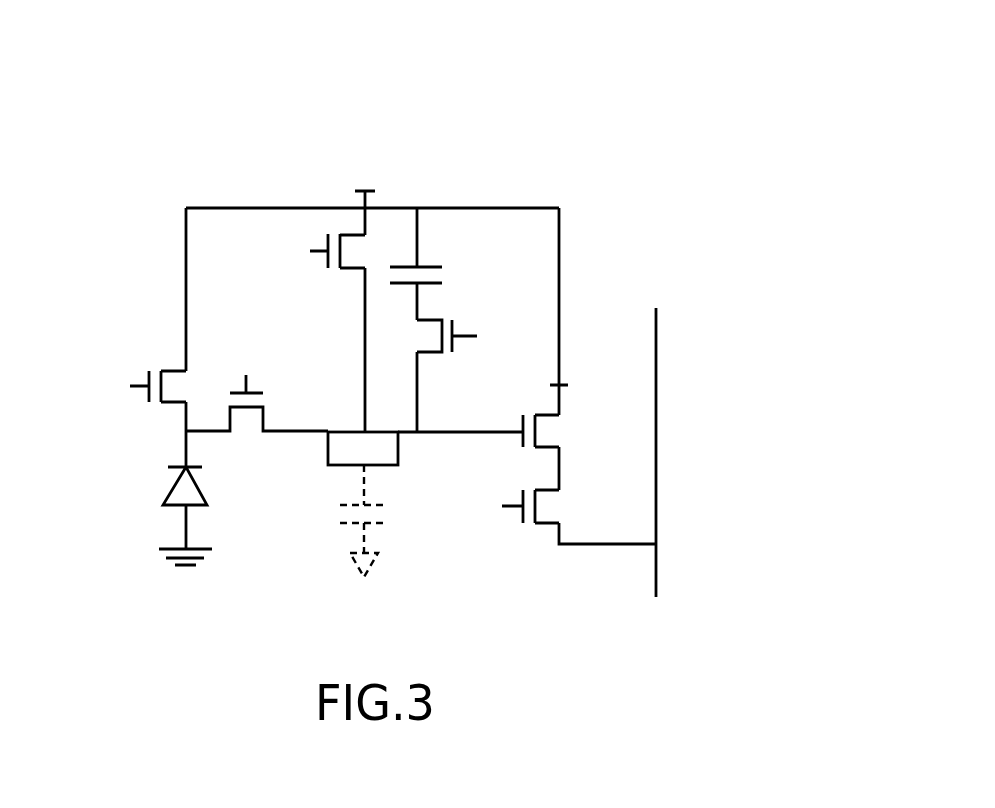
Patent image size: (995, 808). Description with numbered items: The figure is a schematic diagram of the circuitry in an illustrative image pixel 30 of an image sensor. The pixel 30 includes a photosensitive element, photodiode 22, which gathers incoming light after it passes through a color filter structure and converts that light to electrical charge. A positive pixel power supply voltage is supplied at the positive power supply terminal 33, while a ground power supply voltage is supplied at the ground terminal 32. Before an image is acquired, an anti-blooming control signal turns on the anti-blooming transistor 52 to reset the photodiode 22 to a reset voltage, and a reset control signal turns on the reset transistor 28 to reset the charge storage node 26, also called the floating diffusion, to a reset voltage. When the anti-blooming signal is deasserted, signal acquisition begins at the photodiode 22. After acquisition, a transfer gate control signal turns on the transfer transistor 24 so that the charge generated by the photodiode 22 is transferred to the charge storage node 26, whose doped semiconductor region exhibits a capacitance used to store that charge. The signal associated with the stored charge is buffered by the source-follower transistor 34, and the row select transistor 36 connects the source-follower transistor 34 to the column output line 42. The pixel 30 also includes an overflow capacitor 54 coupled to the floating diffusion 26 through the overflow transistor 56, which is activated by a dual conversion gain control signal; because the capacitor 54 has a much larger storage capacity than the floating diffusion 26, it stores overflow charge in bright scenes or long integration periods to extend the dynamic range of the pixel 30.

The image pixel 30 is at (592, 98).
The positive power supply terminal 33 is at (342, 166).
The anti-blooming transistor 52 is at (172, 370).
The reset transistor 28 is at (327, 268).
The transfer transistor 24 is at (255, 393).
The photodiode 22 is at (200, 485).
The ground terminal 32 is at (150, 571).
The overflow capacitor 54 is at (432, 283).
The overflow transistor 56 is at (432, 355).
The charge storage node 26 is at (398, 448).
The source-follower transistor 34 is at (548, 418).
The row select transistor 36 is at (548, 524).
The column output line 42 is at (657, 403).